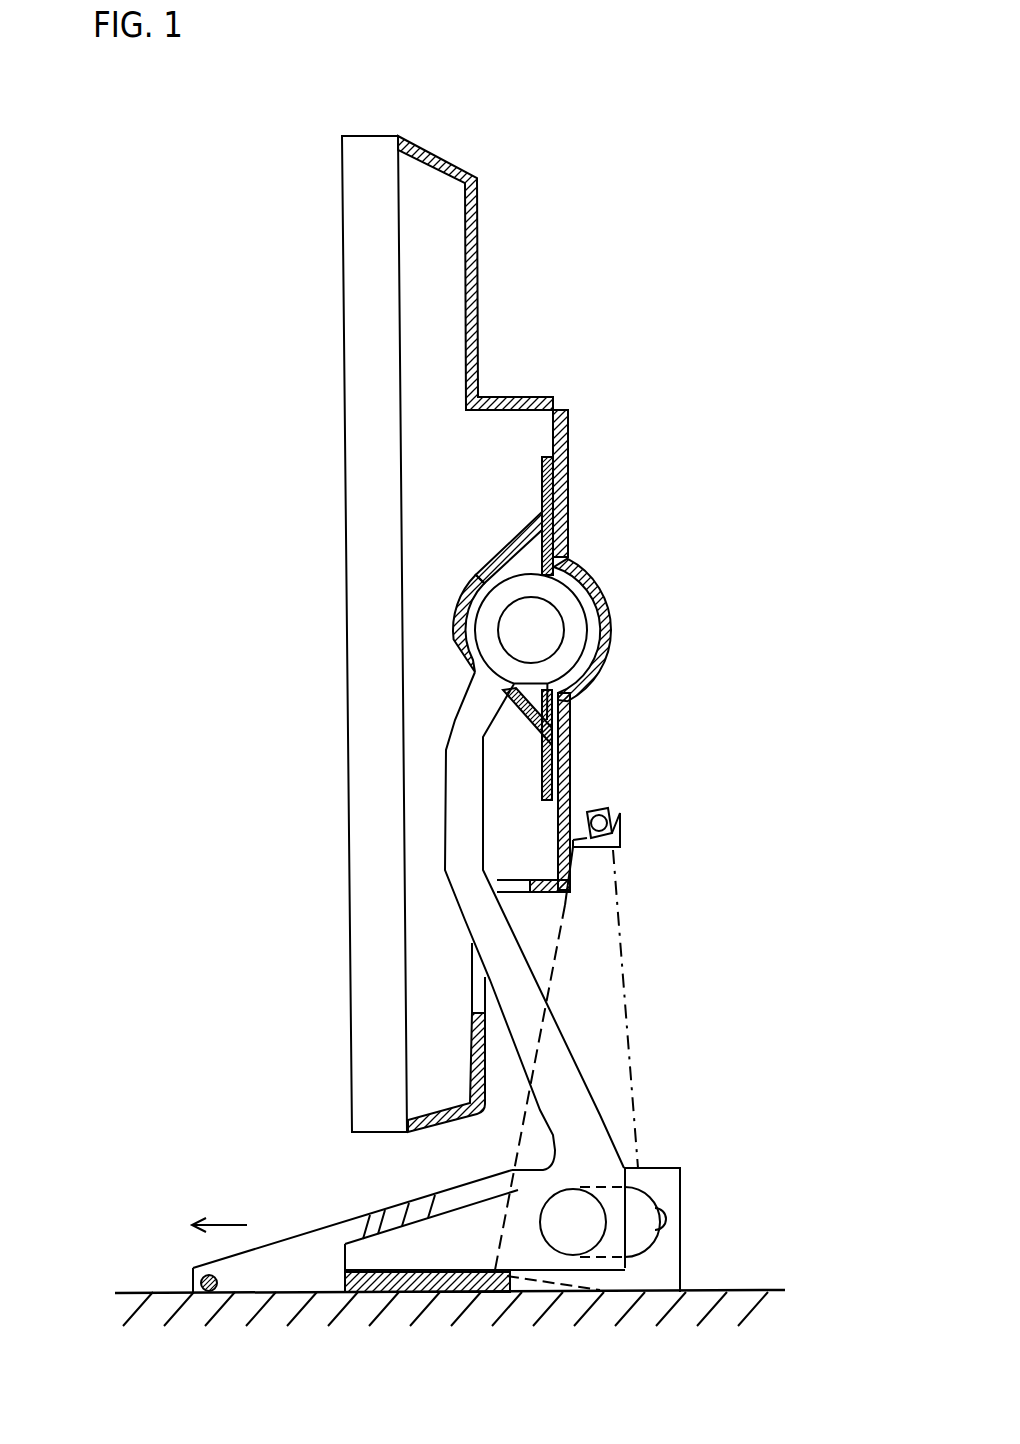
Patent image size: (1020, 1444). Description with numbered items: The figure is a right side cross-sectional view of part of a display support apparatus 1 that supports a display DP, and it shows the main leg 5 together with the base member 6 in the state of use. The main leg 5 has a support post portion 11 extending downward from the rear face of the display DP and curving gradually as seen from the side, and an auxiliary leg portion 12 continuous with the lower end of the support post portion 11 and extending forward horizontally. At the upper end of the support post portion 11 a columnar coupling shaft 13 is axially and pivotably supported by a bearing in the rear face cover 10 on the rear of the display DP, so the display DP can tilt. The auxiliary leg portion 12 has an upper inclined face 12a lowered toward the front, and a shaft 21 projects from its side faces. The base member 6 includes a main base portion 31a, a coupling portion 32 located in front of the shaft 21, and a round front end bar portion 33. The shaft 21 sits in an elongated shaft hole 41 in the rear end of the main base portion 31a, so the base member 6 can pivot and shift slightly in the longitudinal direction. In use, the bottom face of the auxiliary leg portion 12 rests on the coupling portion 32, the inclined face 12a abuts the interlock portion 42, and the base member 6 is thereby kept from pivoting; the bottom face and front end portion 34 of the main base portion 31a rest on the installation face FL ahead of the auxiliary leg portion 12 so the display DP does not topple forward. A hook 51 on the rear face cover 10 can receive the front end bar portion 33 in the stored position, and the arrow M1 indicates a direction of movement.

The display DP is at (342, 297).
The rear face cover 10 is at (570, 409).
The support post portion 11 is at (529, 948).
The coupling shaft 13 is at (540, 632).
The main leg 5 is at (566, 1031).
The hook 51 is at (622, 825).
The display support apparatus 1 is at (730, 690).
The base member 6 is at (669, 1170).
The main base portion 31a is at (668, 1262).
The shaft hole 41 is at (665, 1213).
The shaft 21 is at (587, 1235).
The auxiliary leg portion 12 is at (448, 1255).
The coupling portion 32 is at (360, 1283).
The front end portion 34 is at (297, 1282).
The inclined face 12a is at (433, 1210).
The interlock portion 42 is at (376, 1220).
The front end bar portion 33 is at (208, 1293).
The movement direction M1 is at (219, 1212).
The installation face FL is at (135, 1292).